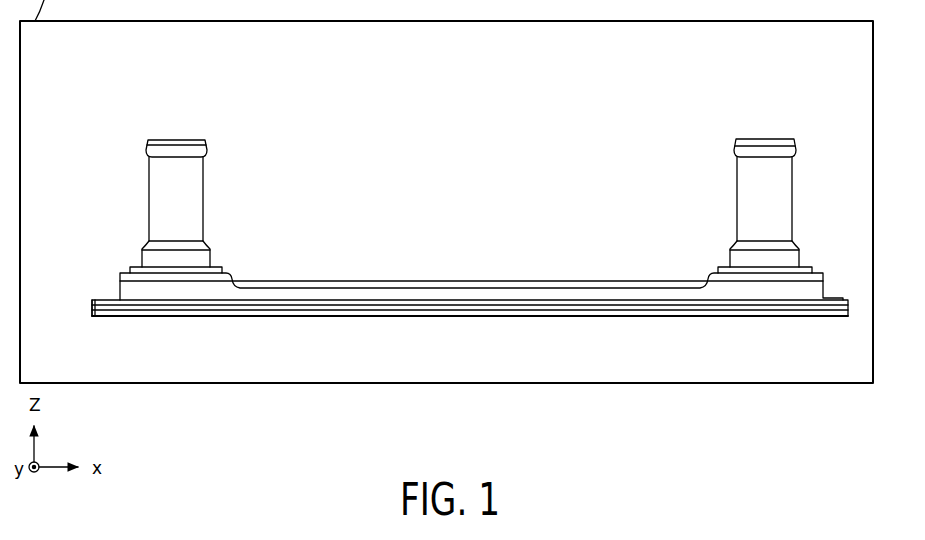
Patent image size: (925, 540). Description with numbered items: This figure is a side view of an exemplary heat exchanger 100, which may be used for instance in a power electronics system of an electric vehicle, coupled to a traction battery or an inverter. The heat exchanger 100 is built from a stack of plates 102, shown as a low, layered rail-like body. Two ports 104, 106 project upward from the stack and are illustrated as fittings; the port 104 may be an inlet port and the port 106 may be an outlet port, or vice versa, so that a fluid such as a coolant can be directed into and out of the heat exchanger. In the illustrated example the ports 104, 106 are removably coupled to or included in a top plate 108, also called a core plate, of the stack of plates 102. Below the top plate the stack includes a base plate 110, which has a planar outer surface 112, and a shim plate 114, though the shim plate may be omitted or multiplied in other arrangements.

The heat exchanger 100 is at (64, 82).
The stack of plates 102 is at (85, 286).
The port 104 is at (128, 166).
The port 106 is at (715, 166).
The top plate 108 is at (98, 299).
The base plate 110 is at (107, 324).
The planar outer surface 112 is at (198, 318).
The shim plate 114 is at (92, 306).